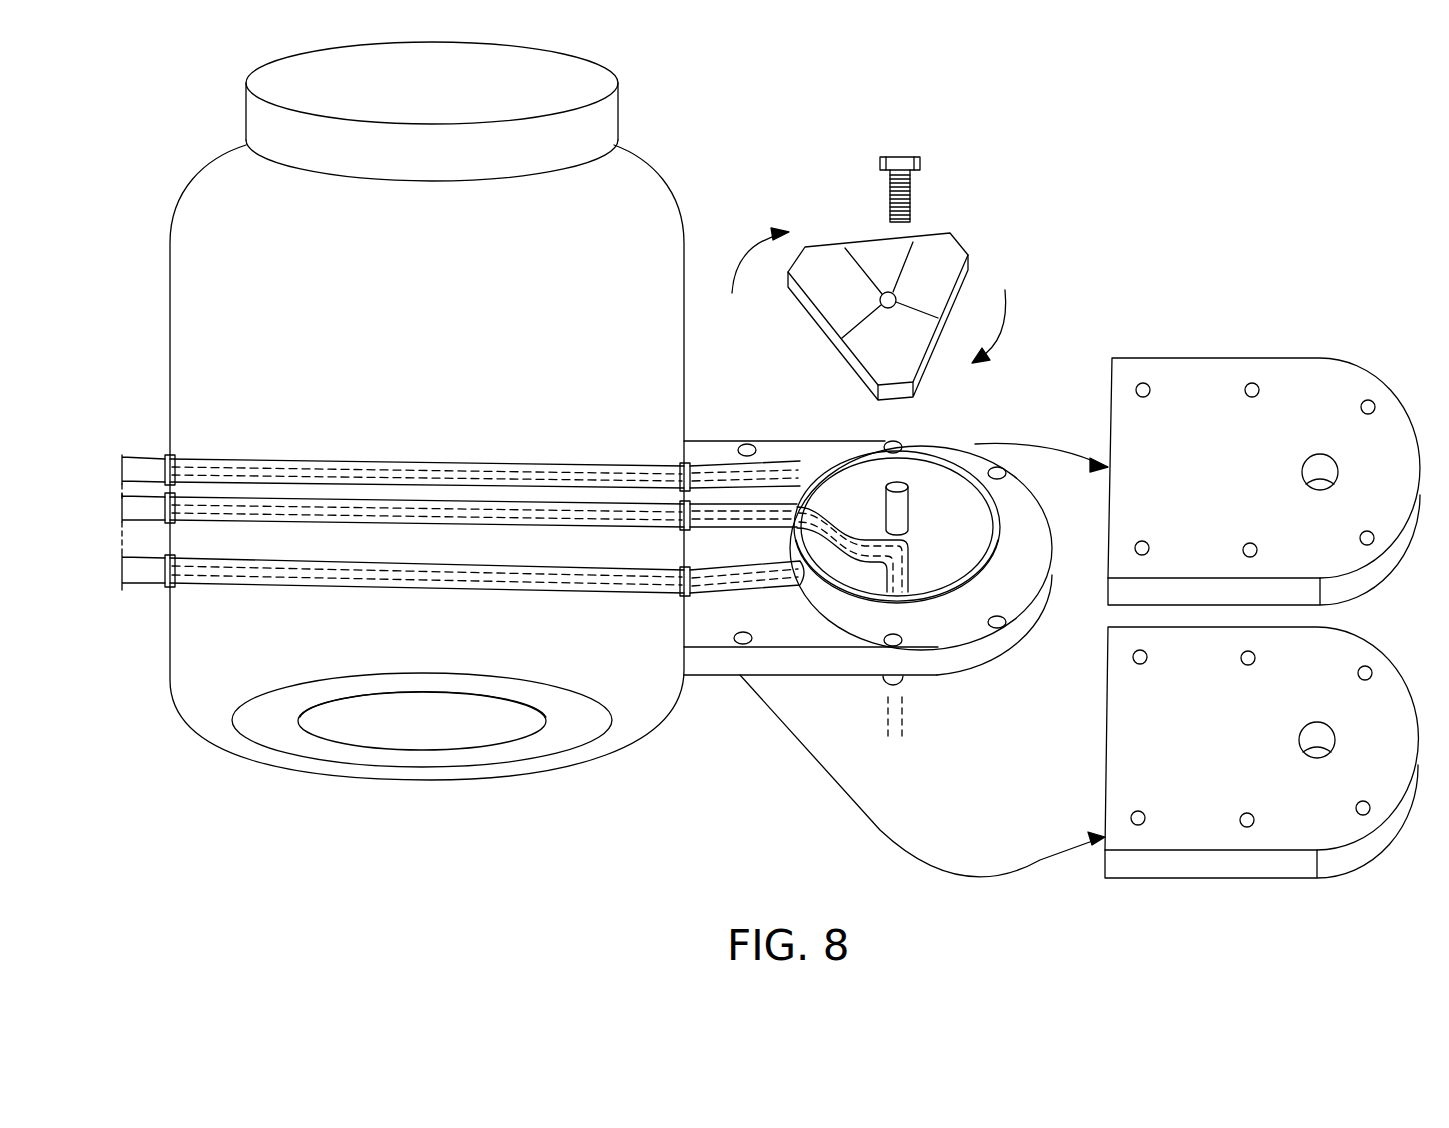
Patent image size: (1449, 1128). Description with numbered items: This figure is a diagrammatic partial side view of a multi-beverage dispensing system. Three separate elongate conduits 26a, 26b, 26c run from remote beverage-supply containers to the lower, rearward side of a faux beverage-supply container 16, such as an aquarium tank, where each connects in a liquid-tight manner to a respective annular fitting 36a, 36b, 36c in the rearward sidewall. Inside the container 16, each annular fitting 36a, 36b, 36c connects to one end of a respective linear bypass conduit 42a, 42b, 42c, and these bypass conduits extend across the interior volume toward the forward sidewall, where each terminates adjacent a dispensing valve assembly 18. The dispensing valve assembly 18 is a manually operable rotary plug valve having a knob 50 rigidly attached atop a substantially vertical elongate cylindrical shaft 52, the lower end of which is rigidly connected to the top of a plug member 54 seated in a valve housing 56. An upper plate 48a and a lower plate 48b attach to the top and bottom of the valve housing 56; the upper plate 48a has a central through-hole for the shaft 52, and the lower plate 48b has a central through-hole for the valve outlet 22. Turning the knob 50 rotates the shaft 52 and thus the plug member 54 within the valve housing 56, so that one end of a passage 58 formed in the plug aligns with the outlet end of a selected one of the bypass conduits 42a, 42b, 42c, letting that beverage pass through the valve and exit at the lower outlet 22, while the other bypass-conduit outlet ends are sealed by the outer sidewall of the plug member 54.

The faux beverage-supply container 16 is at (632, 192).
The dispensing valve assembly 18 is at (970, 172).
The valve outlet 22 is at (897, 690).
The elongate conduit 26a is at (147, 468).
The elongate conduit 26b is at (148, 577).
The elongate conduit 26c is at (157, 575).
The annular fitting 36a is at (168, 452).
The annular fitting 36b is at (172, 498).
The annular fitting 36c is at (176, 590).
The linear bypass conduit 42a is at (402, 472).
The linear bypass conduit 42b is at (423, 515).
The linear bypass conduit 42c is at (418, 577).
The upper plate 48a is at (1292, 402).
The lower plate 48b is at (1380, 733).
The knob 50 is at (928, 257).
The elongate cylindrical shaft 52 is at (900, 497).
The plug member 54 is at (943, 532).
The valve housing 56 is at (1040, 478).
The passage 58 is at (850, 547).